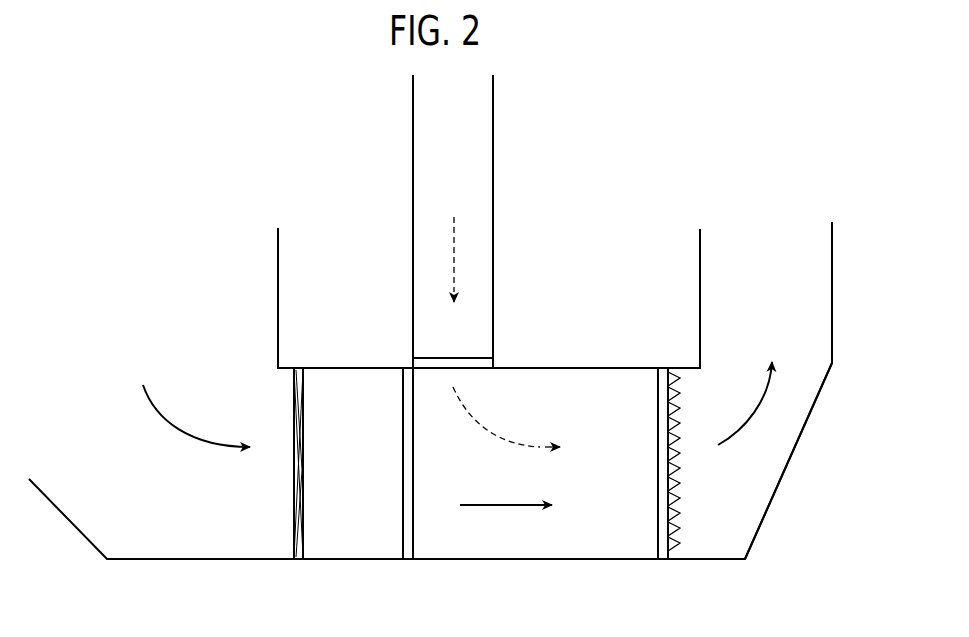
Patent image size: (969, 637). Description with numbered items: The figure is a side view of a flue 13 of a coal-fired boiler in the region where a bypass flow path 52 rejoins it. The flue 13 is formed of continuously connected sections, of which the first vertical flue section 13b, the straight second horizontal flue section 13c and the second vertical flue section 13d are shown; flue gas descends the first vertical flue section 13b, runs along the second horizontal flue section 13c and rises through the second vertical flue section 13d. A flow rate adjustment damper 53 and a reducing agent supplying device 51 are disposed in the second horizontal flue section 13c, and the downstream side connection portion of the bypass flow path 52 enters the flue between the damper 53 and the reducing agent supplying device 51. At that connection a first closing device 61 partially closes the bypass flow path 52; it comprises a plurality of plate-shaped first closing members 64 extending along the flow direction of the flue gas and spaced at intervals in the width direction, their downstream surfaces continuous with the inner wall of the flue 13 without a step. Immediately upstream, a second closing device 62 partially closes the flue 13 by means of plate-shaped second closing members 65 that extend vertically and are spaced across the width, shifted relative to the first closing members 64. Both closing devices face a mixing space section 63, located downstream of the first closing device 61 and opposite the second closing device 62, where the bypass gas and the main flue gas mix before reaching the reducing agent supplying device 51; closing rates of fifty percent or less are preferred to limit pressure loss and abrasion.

The flue 13 is at (285, 243).
The first vertical flue section 13b is at (279, 276).
The second horizontal flue section 13c is at (545, 560).
The second vertical flue section 13d is at (833, 272).
The reducing agent supplying device 51 is at (660, 560).
The bypass flow path 52 is at (494, 150).
The flow rate adjustment damper 53 is at (298, 560).
The first closing device 61 is at (522, 336).
The second closing device 62 is at (356, 522).
The mixing space section 63 is at (477, 487).
The first closing members 64 is at (435, 369).
The second closing members 65 is at (405, 560).